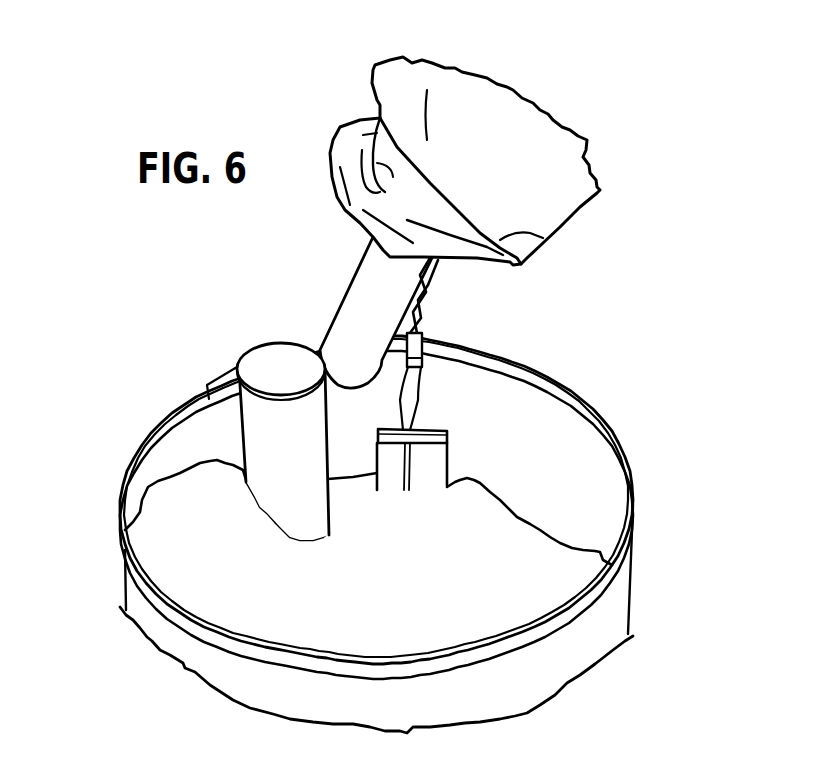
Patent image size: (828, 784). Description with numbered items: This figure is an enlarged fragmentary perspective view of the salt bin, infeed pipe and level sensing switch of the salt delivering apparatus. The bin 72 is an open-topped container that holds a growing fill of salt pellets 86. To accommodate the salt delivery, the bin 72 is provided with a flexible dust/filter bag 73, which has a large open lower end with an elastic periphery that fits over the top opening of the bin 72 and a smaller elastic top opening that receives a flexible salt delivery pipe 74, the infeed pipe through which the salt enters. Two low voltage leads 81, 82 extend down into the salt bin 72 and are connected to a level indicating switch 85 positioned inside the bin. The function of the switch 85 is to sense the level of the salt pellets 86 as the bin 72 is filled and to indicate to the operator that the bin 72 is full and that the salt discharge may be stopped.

The bin 72 is at (419, 534).
The flexible dust/filter bag 73 is at (504, 161).
The flexible salt delivery pipe 74 is at (354, 312).
The low voltage lead 81 is at (471, 295).
The low voltage lead 82 is at (458, 359).
The level indicating switch 85 is at (449, 459).
The salt pellets 86 is at (332, 504).